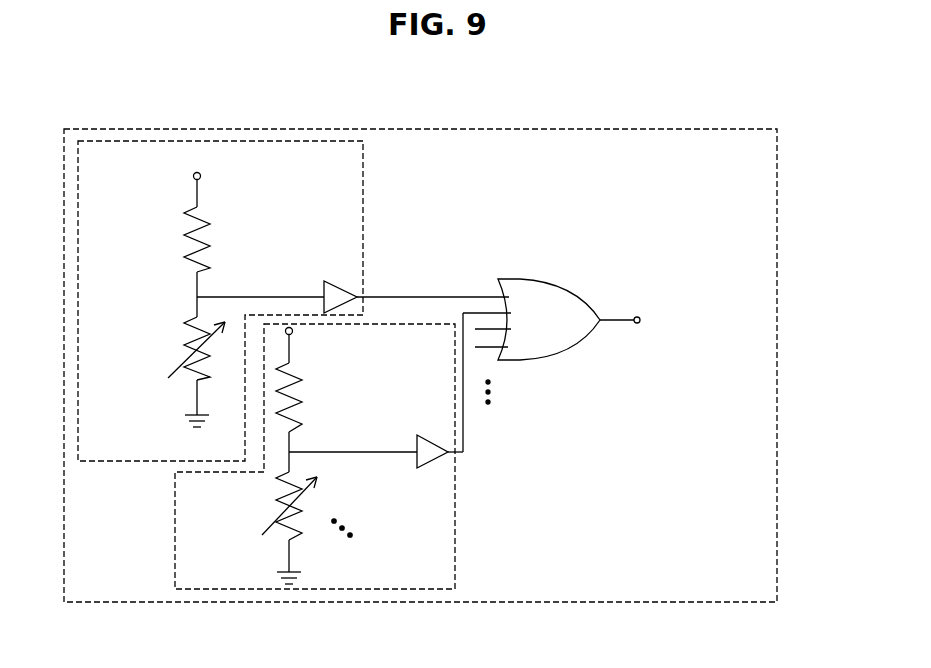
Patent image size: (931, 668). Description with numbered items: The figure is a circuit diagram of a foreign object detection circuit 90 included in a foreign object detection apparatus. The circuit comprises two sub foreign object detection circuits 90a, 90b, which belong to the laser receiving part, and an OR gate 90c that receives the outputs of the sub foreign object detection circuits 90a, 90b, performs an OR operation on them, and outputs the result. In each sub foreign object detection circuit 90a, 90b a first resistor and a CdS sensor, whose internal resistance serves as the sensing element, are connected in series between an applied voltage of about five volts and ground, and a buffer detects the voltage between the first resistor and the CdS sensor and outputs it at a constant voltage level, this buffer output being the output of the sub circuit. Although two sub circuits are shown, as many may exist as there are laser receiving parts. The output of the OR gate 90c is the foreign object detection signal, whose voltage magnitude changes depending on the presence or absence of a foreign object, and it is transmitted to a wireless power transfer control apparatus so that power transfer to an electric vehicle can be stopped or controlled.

The foreign object detection circuit 90 is at (430, 128).
The sub foreign object detection circuit 90a is at (243, 141).
The sub foreign object detection circuit 90b is at (334, 590).
The OR gate 90c is at (557, 280).